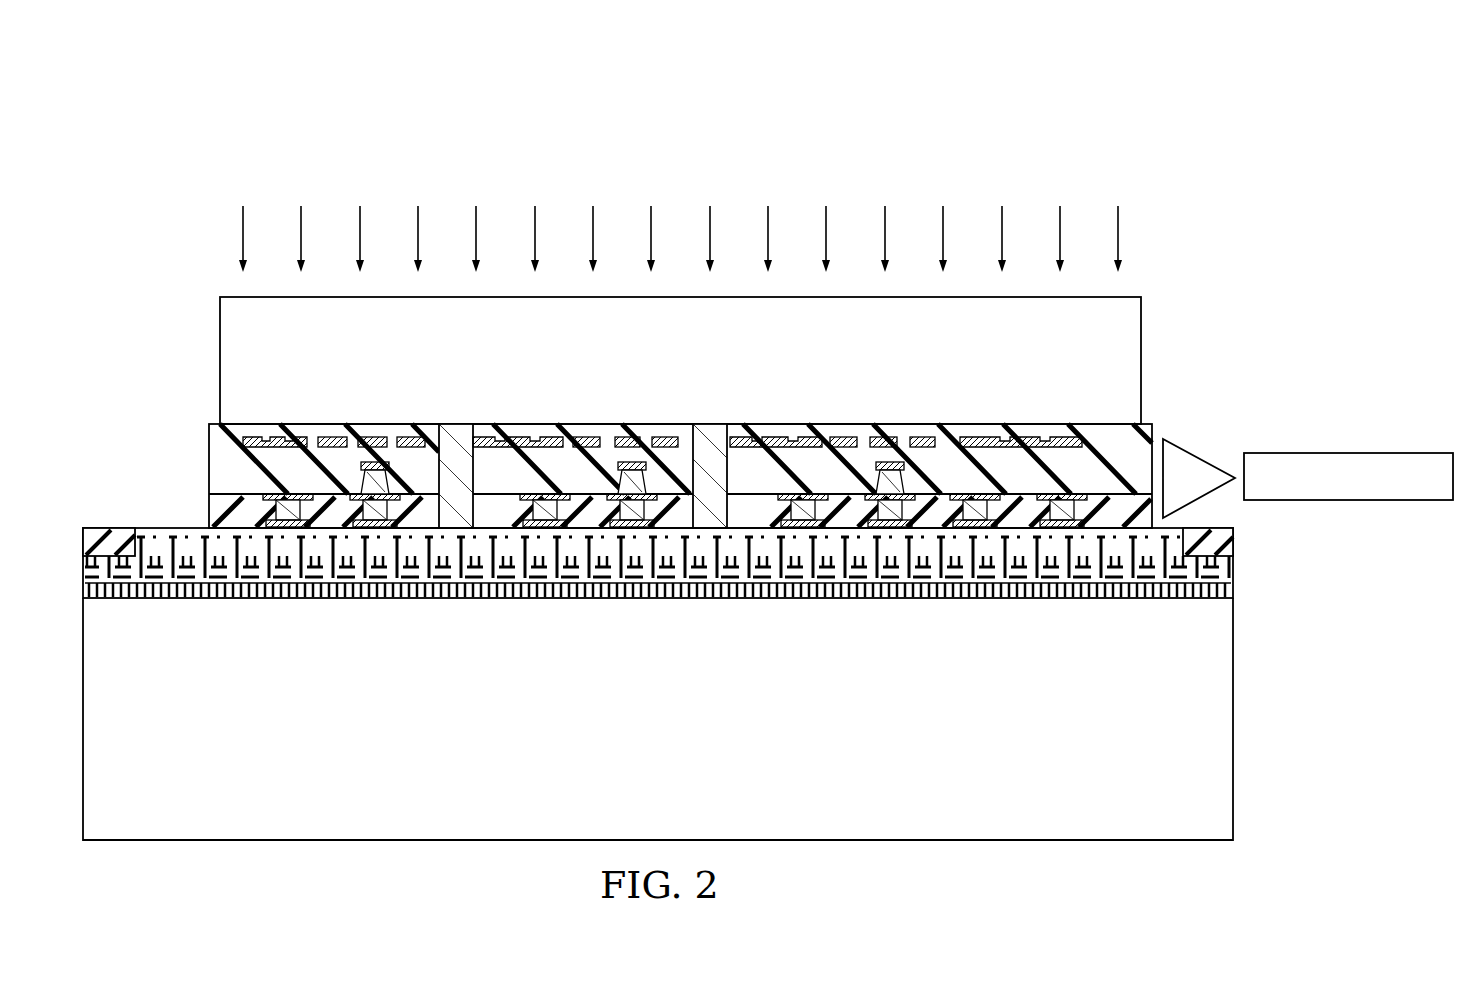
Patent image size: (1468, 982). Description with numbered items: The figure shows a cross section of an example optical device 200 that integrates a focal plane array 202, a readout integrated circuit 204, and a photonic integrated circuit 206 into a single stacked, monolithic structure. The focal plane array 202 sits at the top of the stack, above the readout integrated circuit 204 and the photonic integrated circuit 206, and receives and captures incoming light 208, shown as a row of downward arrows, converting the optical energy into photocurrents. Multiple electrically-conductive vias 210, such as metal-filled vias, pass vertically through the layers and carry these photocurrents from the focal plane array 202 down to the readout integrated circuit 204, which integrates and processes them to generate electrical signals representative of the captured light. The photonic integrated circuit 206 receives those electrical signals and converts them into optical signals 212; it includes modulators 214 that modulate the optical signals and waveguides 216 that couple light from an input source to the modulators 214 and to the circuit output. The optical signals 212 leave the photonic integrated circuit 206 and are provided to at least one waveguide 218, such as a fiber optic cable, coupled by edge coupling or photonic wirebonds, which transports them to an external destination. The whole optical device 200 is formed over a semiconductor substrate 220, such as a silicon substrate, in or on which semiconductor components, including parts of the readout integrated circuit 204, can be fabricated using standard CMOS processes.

The optical device 200 is at (518, 138).
The focal plane array 202 is at (230, 359).
The readout integrated circuit 204 is at (1243, 530).
The photonic integrated circuit 206 is at (217, 457).
The incoming light 208 is at (222, 205).
The electrically-conductive vias 210 is at (456, 432).
The optical signals 212 is at (1197, 464).
The modulators 214 is at (896, 483).
The waveguides 216 is at (533, 435).
The waveguide 218 is at (1348, 462).
The semiconductor substrate 220 is at (681, 733).